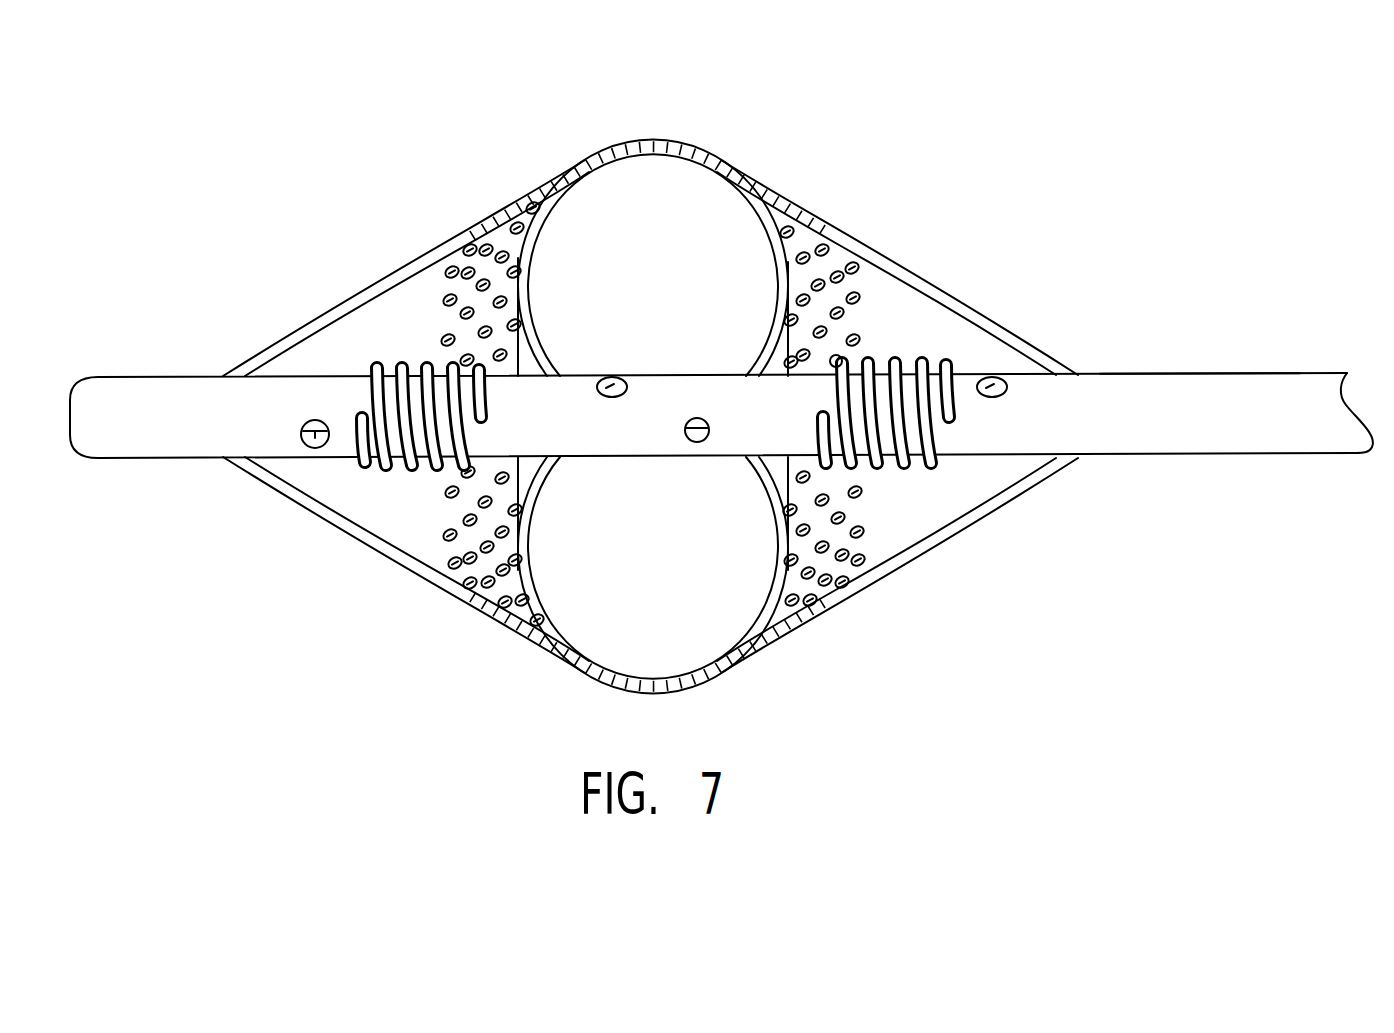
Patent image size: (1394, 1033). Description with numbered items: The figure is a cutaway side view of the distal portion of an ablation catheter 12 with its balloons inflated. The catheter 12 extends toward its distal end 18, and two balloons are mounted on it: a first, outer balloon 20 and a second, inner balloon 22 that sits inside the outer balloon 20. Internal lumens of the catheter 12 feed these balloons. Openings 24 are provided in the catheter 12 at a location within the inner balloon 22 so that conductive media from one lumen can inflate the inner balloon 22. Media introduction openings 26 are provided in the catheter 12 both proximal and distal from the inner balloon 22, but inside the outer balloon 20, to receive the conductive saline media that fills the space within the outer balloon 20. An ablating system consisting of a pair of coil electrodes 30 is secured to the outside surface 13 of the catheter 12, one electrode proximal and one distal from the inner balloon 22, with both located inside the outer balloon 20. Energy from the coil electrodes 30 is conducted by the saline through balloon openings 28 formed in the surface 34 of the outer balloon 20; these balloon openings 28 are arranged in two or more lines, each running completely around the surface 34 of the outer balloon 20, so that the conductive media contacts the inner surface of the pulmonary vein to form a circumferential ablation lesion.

The catheter 12 is at (1233, 400).
The outside surface of the catheter 13 is at (1172, 374).
The distal end of the catheter 18 is at (76, 386).
The first, outer balloon 20 is at (876, 255).
The second, inner balloon 22 is at (750, 640).
The openings 24 is at (690, 418).
The media introduction openings 26 is at (997, 380).
The balloon openings 28 is at (533, 205).
The coil electrodes 30 is at (947, 371).
The surface of the outer balloon 34 is at (385, 272).